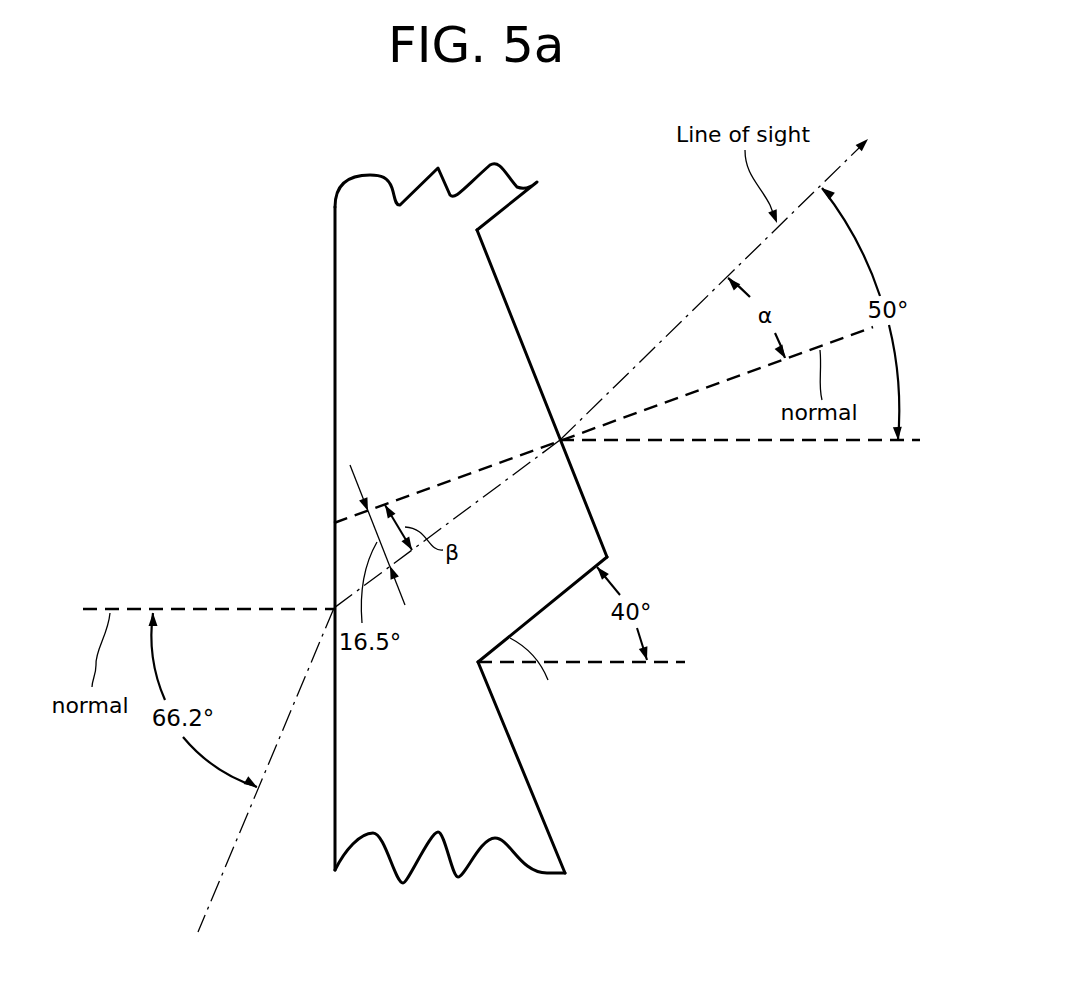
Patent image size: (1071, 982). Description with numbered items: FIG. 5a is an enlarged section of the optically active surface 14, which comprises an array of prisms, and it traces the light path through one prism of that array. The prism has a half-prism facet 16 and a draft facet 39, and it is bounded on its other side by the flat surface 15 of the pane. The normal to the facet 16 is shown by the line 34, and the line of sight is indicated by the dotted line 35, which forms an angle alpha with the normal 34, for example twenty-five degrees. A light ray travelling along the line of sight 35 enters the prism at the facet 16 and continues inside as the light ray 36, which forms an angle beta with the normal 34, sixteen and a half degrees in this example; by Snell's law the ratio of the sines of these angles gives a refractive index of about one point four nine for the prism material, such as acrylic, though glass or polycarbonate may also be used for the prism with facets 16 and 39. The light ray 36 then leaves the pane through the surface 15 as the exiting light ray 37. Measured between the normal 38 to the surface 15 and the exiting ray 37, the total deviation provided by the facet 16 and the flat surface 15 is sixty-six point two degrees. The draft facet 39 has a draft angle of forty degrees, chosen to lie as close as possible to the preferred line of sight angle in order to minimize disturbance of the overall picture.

The optically active surface 14 is at (460, 780).
The surface 15 is at (332, 313).
The prism facet 16 is at (508, 303).
The normal to the facet 34 is at (672, 402).
The line of sight 35 is at (687, 313).
The light ray in prism 36 is at (487, 496).
The exiting light ray 37 is at (228, 860).
The normal to the surface 38 is at (222, 608).
The draft facet 39 is at (513, 634).